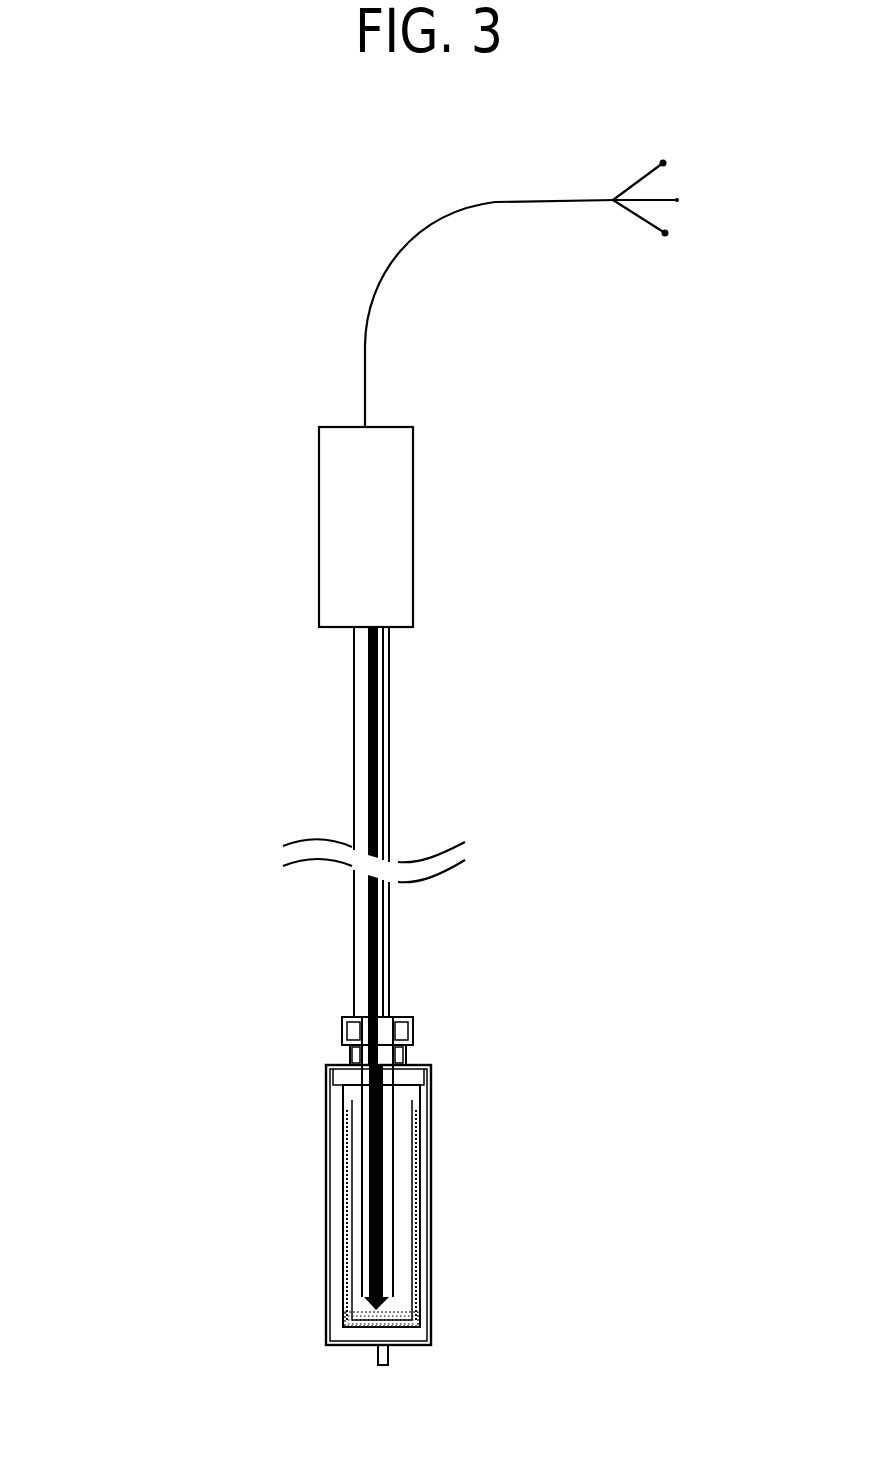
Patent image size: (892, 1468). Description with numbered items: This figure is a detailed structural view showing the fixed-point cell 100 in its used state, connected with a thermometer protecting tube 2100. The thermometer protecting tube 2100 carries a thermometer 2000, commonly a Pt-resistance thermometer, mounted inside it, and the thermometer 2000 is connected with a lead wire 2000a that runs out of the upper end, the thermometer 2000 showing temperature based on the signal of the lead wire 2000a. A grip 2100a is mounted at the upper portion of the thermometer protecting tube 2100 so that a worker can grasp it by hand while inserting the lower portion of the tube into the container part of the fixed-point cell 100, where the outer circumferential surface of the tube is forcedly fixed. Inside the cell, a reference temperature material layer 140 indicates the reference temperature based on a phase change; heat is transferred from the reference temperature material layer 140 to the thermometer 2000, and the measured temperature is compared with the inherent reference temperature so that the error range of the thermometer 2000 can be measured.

The fixed-point cell 100 is at (265, 1097).
The reference temperature material layer 140 is at (348, 1312).
The thermometer 2000 is at (377, 705).
The lead wire 2000a is at (560, 201).
The thermometer protecting tube 2100 is at (388, 770).
The grip 2100a is at (388, 523).